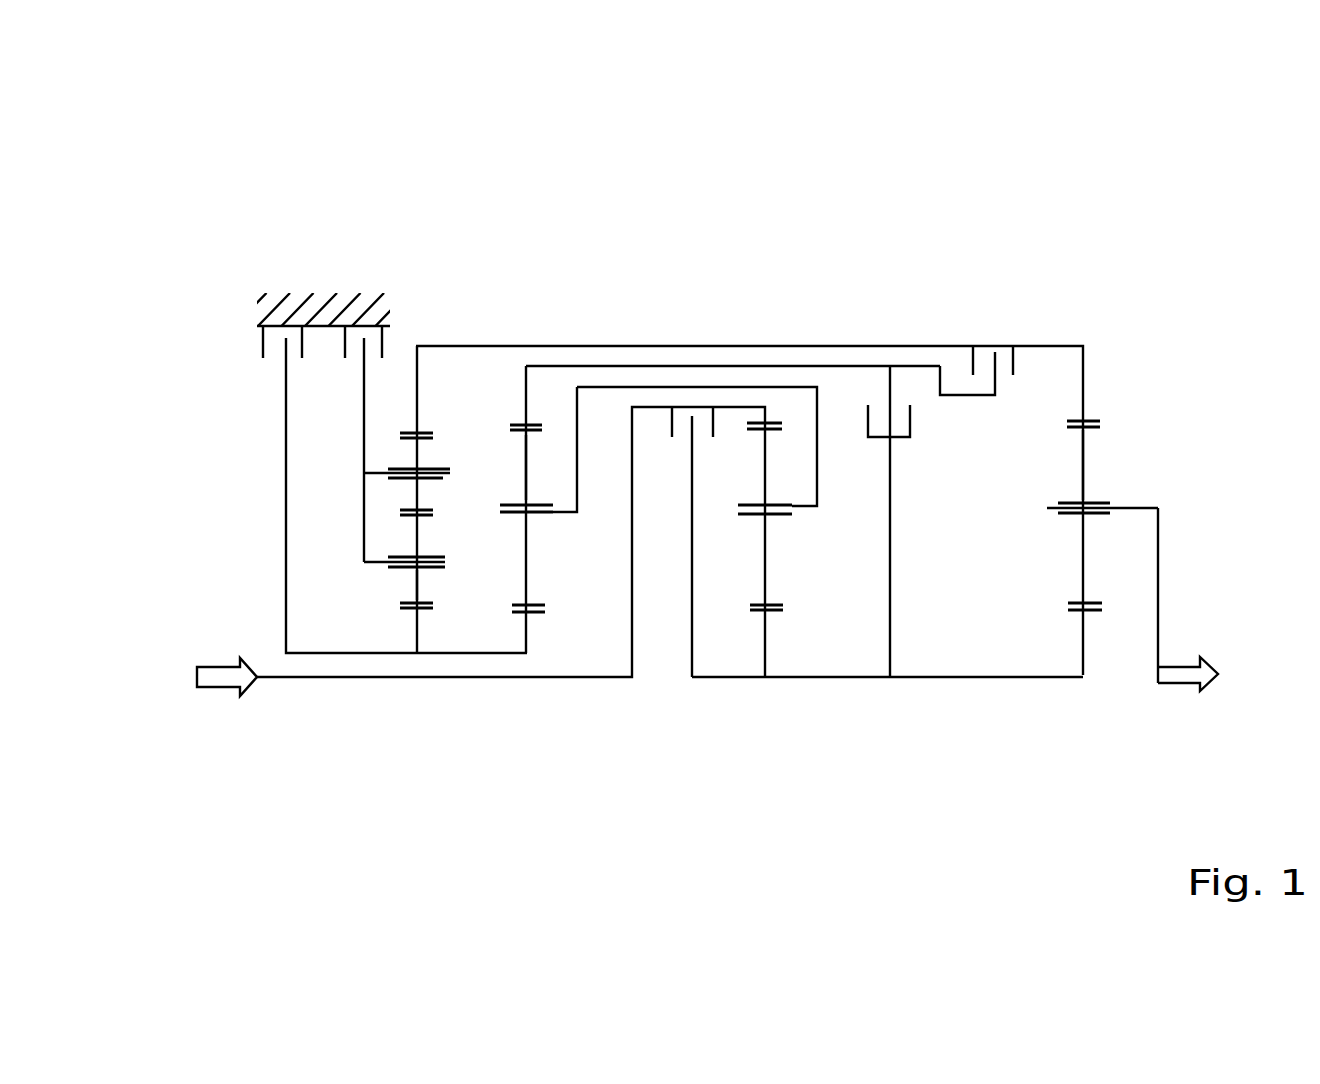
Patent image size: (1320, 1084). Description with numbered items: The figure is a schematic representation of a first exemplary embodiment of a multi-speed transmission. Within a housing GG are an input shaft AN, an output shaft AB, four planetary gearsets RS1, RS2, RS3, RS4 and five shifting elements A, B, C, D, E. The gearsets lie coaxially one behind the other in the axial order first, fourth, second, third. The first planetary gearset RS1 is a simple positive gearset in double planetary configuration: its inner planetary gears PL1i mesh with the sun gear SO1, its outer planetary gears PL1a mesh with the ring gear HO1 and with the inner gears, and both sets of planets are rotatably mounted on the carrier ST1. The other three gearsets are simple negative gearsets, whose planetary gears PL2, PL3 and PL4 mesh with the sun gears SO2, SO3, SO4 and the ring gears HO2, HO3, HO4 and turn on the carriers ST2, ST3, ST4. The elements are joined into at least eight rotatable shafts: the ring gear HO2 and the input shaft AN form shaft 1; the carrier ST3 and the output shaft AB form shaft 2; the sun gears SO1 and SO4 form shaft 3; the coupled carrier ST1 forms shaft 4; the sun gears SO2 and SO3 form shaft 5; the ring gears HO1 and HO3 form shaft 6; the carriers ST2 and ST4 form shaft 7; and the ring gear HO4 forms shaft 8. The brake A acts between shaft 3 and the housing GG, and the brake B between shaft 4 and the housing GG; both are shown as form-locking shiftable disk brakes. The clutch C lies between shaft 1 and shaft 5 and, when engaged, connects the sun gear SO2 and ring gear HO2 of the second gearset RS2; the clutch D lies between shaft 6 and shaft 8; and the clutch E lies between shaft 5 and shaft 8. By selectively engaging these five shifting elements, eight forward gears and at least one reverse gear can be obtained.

The housing GG is at (320, 298).
The brake A is at (282, 318).
The brake B is at (363, 318).
The clutch C is at (696, 542).
The clutch D is at (981, 382).
The clutch E is at (894, 521).
The input shaft AN is at (213, 687).
The output shaft AB is at (1182, 670).
The shaft 1 is at (632, 628).
The shaft 2 is at (1158, 580).
The shaft 3 is at (303, 653).
The shaft 4 is at (364, 433).
The shaft 5 is at (958, 675).
The shaft 6 is at (907, 344).
The shaft 7 is at (723, 385).
The shaft 8 is at (645, 367).
The first planetary gearset RS1 is at (435, 525).
The second planetary gearset RS2 is at (807, 542).
The third planetary gearset RS3 is at (1098, 525).
The fourth planetary gearset RS4 is at (562, 533).
The ring gear HO1 is at (413, 396).
The ring gear HO2 is at (767, 408).
The ring gear HO3 is at (1083, 362).
The ring gear HO4 is at (523, 392).
The sun gear SO1 is at (417, 627).
The sun gear SO2 is at (765, 640).
The sun gear SO3 is at (1083, 633).
The sun gear SO4 is at (527, 630).
The carrier ST1 is at (370, 562).
The carrier ST2 is at (738, 507).
The carrier ST3 is at (1130, 508).
The carrier ST4 is at (500, 507).
The outer planetary gears PL1a is at (413, 452).
The inner planetary gears PL1i is at (413, 587).
The planetary gears PL2 is at (765, 560).
The planetary gears PL3 is at (1083, 462).
The planetary gears PL4 is at (528, 473).